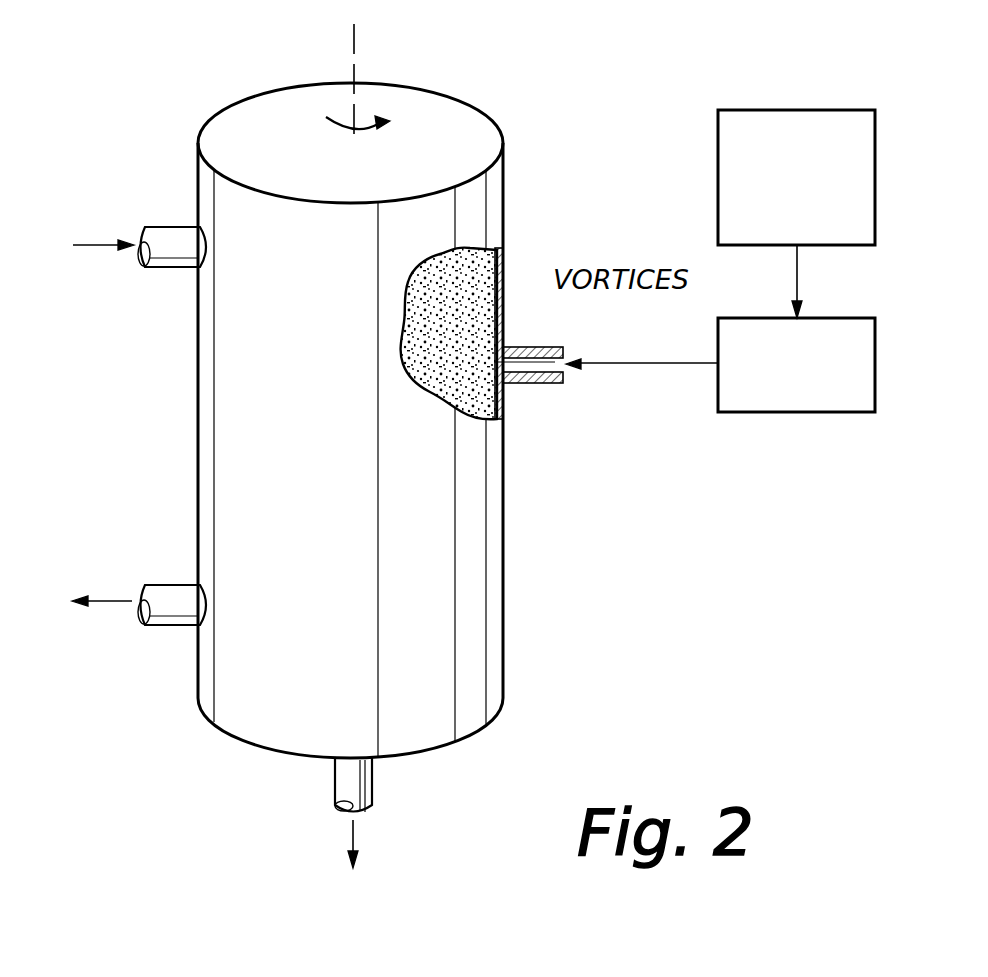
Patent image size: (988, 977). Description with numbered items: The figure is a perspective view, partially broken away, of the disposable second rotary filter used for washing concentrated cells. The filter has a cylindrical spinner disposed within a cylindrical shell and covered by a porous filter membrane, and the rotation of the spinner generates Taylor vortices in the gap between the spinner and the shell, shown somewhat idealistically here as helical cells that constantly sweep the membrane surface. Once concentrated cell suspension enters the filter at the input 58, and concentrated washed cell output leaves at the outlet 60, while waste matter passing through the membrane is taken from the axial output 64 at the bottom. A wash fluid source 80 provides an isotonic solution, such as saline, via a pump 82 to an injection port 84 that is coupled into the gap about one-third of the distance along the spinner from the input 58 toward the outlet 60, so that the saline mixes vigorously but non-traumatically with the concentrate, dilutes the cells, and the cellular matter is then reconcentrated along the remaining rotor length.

The input 58 is at (169, 227).
The outlet 60 is at (164, 586).
The axial output 64 is at (373, 790).
The wash fluid source 80 is at (718, 137).
The pump 82 is at (718, 402).
The injection port 84 is at (535, 320).